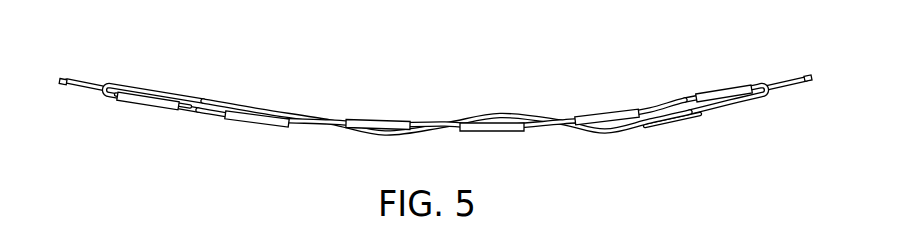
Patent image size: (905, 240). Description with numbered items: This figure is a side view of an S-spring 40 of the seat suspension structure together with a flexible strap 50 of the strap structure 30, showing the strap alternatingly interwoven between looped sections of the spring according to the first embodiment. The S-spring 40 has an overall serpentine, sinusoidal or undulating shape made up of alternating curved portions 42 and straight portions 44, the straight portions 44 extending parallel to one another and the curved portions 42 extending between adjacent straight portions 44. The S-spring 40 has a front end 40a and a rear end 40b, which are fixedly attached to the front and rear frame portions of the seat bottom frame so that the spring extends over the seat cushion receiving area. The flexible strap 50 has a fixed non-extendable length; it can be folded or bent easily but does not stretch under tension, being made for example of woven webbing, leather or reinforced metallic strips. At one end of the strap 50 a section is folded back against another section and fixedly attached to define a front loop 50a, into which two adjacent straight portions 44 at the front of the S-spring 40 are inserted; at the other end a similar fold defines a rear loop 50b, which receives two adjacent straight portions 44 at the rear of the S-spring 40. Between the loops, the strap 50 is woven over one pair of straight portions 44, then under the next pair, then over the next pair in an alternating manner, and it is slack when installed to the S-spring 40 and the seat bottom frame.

The strap structure 30 is at (434, 101).
The S-spring 40 is at (68, 81).
The front end 40a is at (63, 85).
The rear end 40b is at (809, 82).
The curved portions 42 is at (150, 108).
The straight portions 44 is at (118, 99).
The flexible strap 50 is at (277, 94).
The front loop 50a is at (151, 92).
The rear loop 50b is at (742, 86).